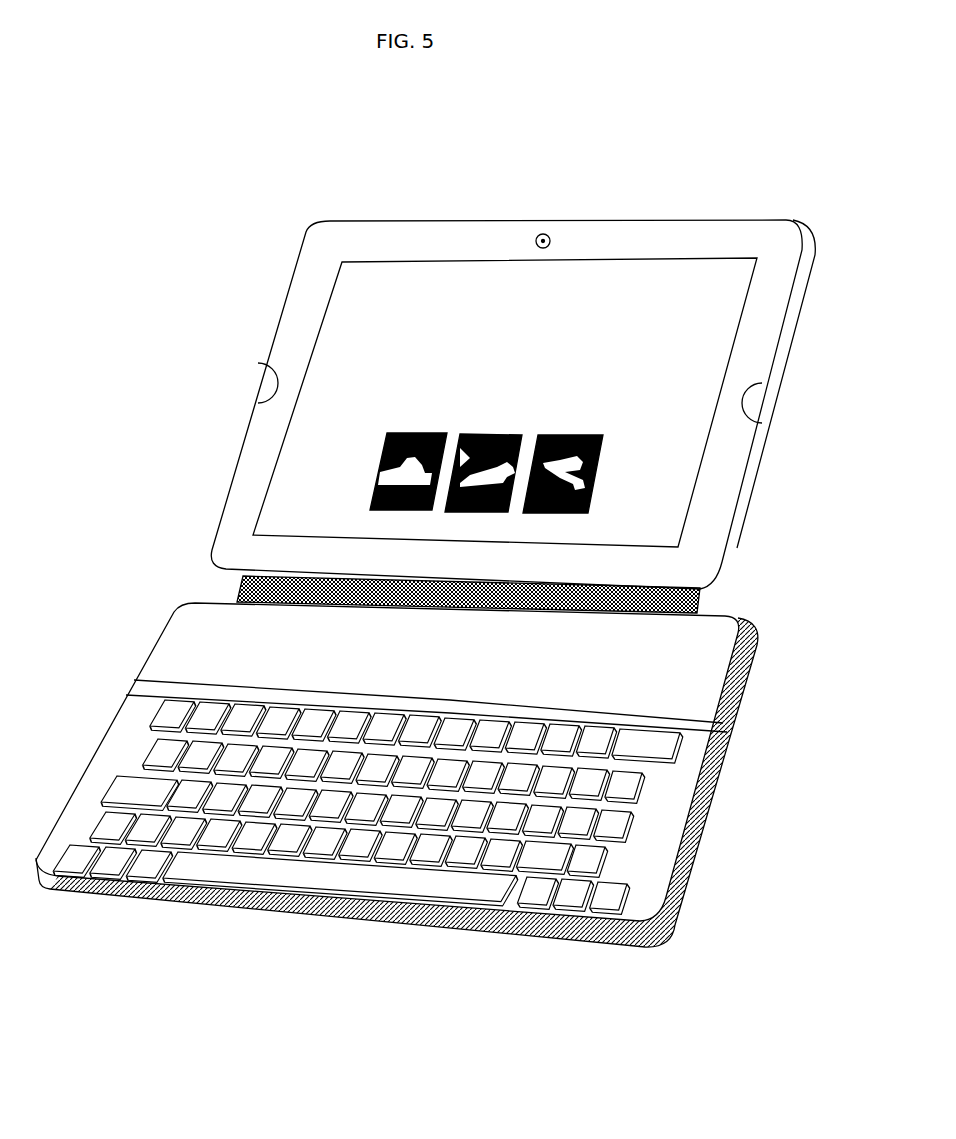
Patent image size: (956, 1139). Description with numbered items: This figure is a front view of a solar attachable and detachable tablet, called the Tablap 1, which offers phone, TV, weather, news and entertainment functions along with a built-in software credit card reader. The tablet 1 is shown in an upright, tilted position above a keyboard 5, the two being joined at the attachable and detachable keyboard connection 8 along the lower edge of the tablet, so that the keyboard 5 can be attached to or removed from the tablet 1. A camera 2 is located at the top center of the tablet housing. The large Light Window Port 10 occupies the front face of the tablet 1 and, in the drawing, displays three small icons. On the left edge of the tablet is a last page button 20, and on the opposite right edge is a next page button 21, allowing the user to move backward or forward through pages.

The tablet 1 is at (280, 288).
The camera 2 is at (548, 236).
The keyboard 5 is at (118, 704).
The attachable and detachable keyboard connection 8 is at (230, 578).
The Light Window Port 10 is at (315, 383).
The last page button 20 is at (258, 393).
The next page button 21 is at (770, 392).